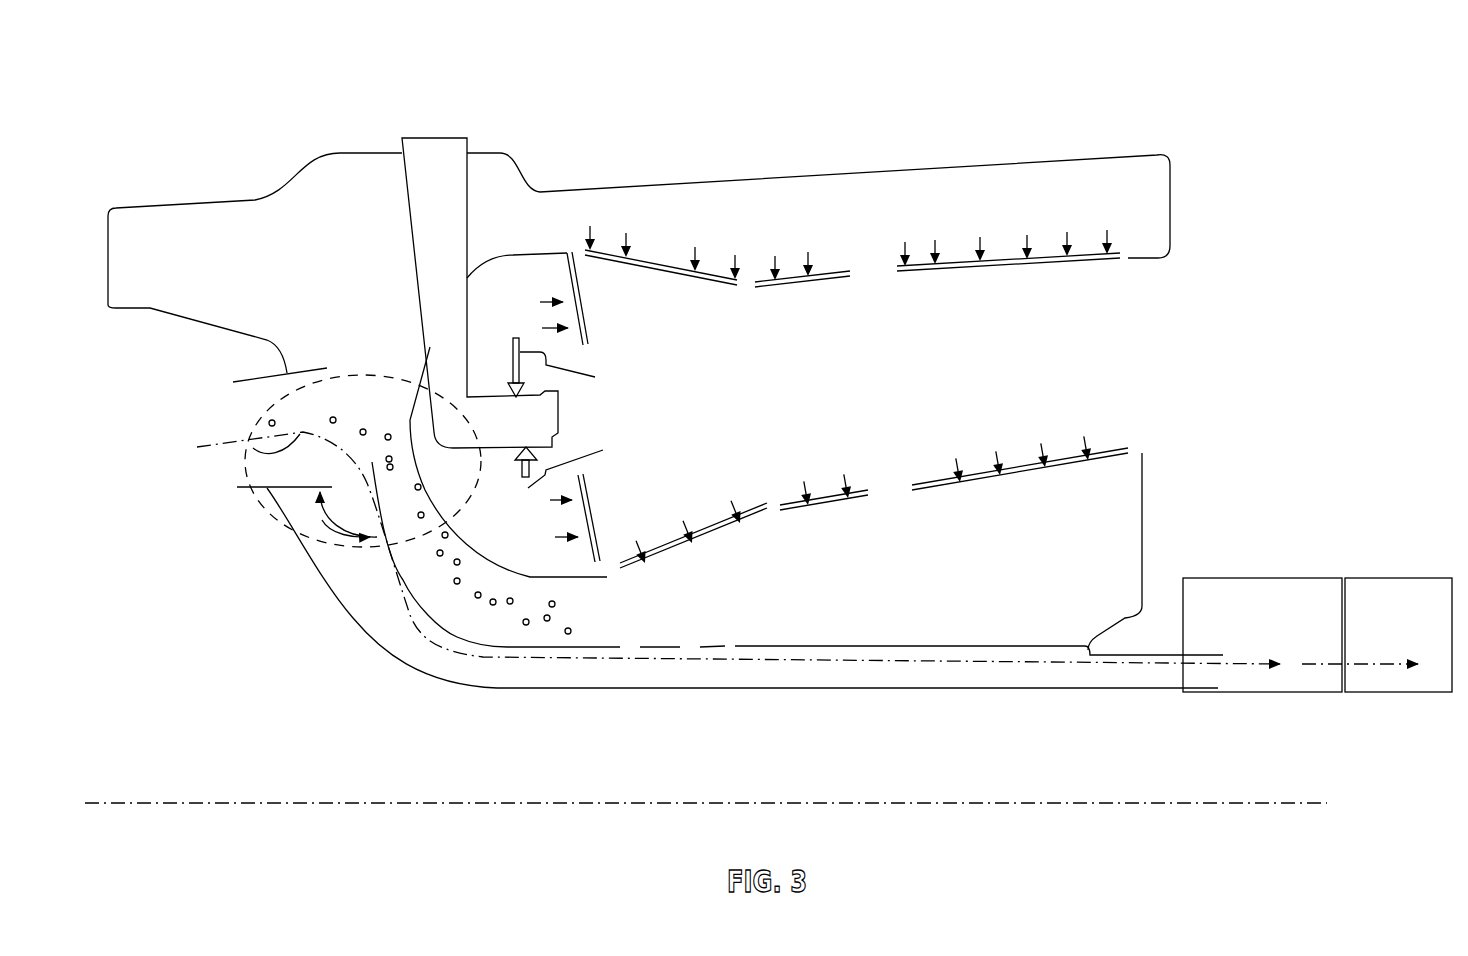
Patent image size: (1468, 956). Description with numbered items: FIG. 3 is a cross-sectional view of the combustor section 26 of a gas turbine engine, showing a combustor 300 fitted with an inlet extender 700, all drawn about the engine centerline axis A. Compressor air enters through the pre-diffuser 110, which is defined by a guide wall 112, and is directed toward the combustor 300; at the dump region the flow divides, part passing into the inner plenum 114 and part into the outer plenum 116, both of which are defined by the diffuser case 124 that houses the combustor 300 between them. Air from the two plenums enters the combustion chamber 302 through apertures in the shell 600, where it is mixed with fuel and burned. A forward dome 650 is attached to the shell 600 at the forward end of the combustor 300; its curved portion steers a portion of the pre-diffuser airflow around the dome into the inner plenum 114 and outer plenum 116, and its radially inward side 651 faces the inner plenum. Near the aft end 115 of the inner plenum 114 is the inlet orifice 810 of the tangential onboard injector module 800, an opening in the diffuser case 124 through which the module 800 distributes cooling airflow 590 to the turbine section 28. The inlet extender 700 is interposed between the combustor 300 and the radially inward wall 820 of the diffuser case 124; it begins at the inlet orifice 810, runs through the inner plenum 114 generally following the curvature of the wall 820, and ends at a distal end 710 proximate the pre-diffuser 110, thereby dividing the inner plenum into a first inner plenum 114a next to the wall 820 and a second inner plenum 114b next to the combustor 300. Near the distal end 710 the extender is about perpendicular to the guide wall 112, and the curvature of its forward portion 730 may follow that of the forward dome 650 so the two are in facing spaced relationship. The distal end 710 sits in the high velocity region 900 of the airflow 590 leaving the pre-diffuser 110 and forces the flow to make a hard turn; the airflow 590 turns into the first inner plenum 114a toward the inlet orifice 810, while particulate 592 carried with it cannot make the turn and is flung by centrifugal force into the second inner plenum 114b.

The combustor section 26 is at (928, 36).
The diffuser case 124 is at (793, 173).
The outer plenum 116 is at (753, 221).
The combustor 300 is at (903, 262).
The combustion chamber 302 is at (746, 413).
The shell 600 is at (577, 314).
The high velocity region 900 is at (357, 375).
The pre-diffuser 110 is at (304, 394).
The forward dome 650 is at (407, 422).
The particulate 592 is at (268, 422).
The airflow 590 is at (253, 448).
The distal end 710 is at (380, 470).
The guide wall 112 is at (277, 488).
The first inner plenum 114a is at (337, 581).
The forward portion 730 is at (438, 622).
The radially inward side 651 is at (532, 724).
The second inner plenum 114b is at (740, 613).
The inlet extender 700 is at (855, 645).
The inner plenum 114 is at (966, 556).
The aft end 115 is at (1110, 558).
The inlet orifice 810 is at (1112, 675).
The radially inward wall 820 is at (945, 688).
The tangential onboard injector module 800 is at (1243, 646).
The turbine section 28 is at (1384, 646).
The engine centerline axis A is at (1315, 803).